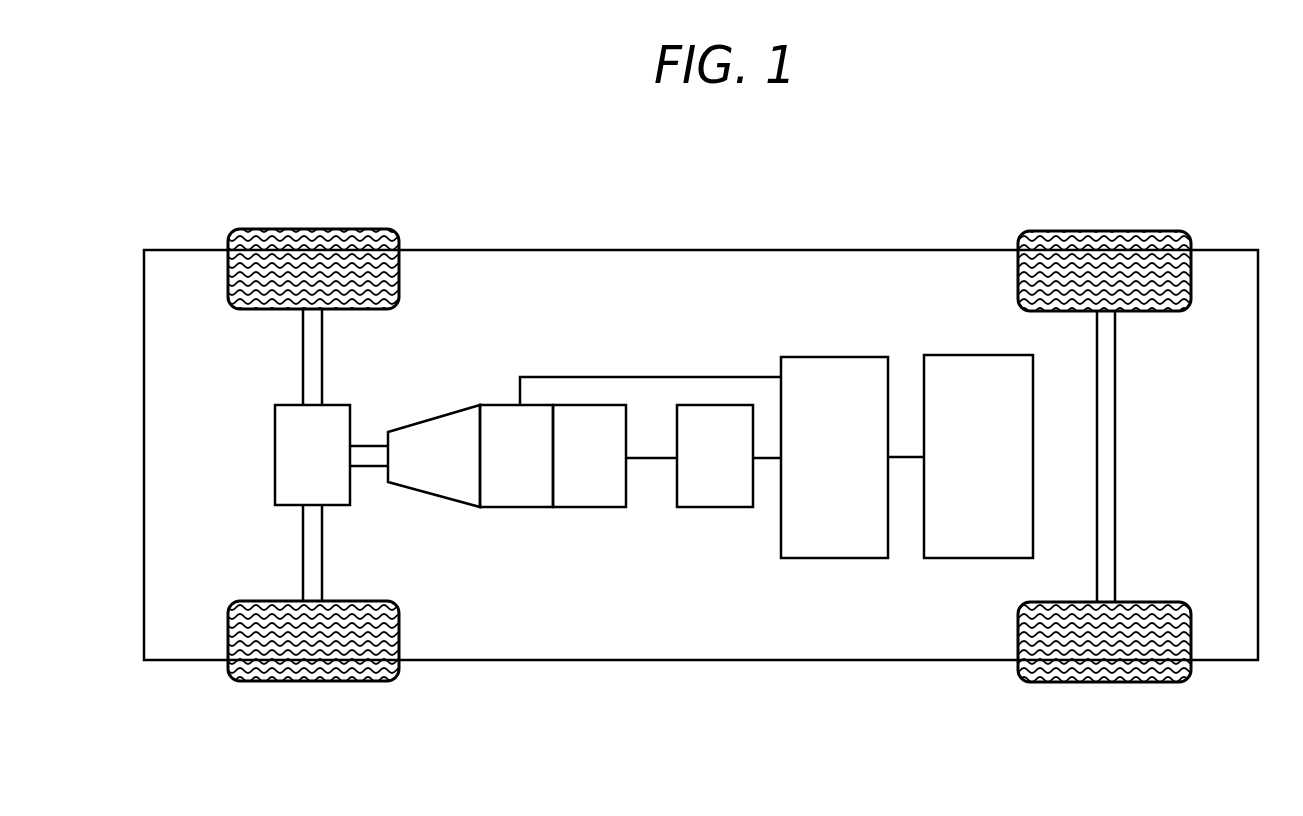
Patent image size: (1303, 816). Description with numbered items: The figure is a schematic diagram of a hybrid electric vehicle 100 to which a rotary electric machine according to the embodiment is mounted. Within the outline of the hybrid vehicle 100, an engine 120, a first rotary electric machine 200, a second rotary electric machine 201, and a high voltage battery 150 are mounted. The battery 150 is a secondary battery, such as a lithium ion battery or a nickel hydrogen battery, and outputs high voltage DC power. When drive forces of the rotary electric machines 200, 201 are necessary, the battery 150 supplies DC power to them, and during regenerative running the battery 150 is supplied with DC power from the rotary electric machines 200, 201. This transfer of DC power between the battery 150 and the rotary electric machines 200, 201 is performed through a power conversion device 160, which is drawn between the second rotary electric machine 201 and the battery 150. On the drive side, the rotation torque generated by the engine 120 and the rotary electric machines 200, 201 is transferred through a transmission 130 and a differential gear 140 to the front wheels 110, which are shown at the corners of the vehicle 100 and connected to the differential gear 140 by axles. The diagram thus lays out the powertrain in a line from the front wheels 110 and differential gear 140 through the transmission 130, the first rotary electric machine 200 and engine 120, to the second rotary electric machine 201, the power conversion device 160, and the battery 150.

The hybrid vehicle 100 is at (657, 241).
The front wheels 110 is at (313, 228).
The engine 120 is at (589, 456).
The transmission 130 is at (434, 456).
The differential gear 140 is at (312, 455).
The high voltage battery 150 is at (978, 456).
The power conversion device 160 is at (834, 457).
The first rotary electric machine 200 is at (493, 474).
The second rotary electric machine 201 is at (691, 474).